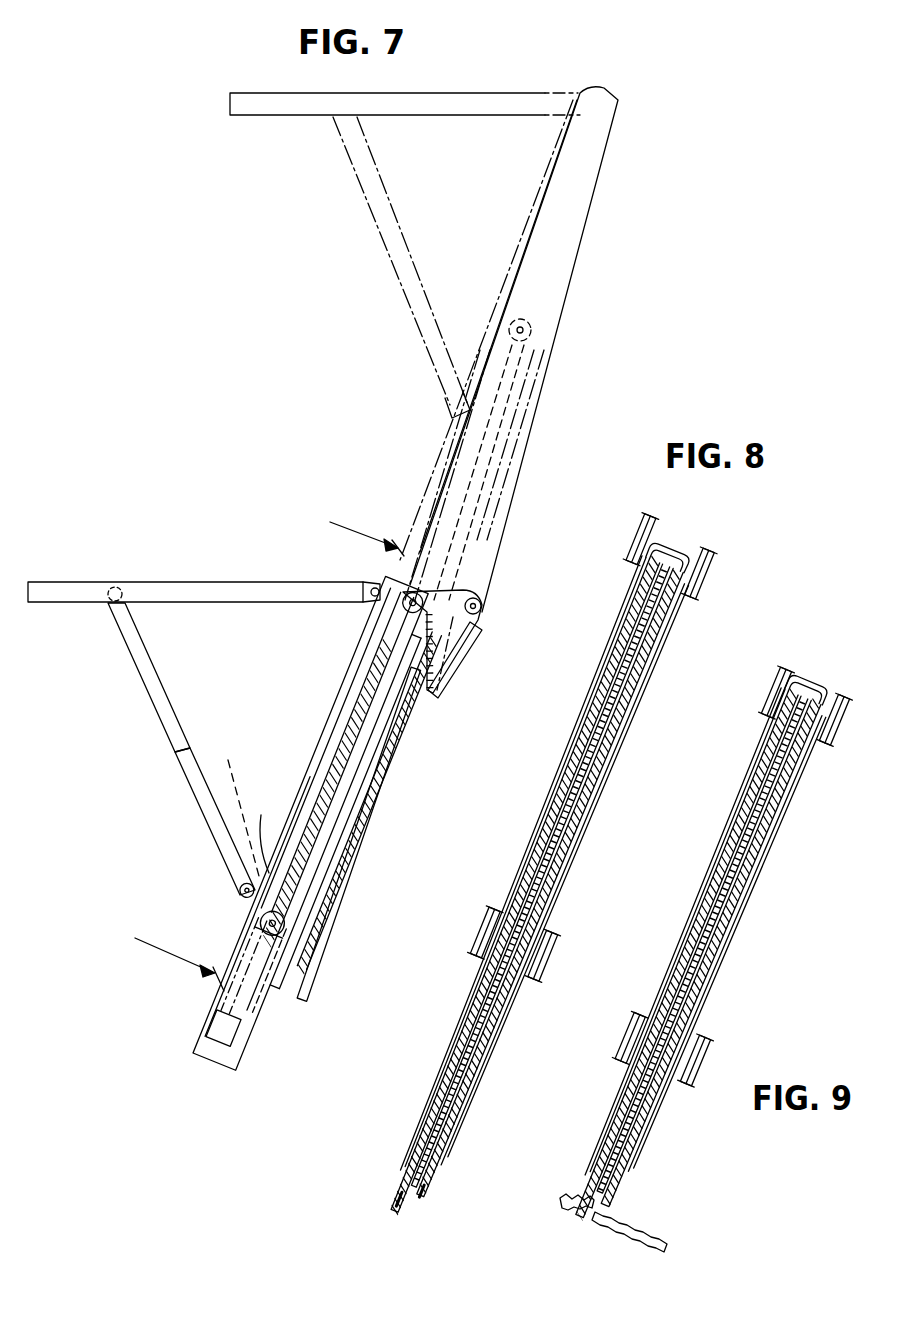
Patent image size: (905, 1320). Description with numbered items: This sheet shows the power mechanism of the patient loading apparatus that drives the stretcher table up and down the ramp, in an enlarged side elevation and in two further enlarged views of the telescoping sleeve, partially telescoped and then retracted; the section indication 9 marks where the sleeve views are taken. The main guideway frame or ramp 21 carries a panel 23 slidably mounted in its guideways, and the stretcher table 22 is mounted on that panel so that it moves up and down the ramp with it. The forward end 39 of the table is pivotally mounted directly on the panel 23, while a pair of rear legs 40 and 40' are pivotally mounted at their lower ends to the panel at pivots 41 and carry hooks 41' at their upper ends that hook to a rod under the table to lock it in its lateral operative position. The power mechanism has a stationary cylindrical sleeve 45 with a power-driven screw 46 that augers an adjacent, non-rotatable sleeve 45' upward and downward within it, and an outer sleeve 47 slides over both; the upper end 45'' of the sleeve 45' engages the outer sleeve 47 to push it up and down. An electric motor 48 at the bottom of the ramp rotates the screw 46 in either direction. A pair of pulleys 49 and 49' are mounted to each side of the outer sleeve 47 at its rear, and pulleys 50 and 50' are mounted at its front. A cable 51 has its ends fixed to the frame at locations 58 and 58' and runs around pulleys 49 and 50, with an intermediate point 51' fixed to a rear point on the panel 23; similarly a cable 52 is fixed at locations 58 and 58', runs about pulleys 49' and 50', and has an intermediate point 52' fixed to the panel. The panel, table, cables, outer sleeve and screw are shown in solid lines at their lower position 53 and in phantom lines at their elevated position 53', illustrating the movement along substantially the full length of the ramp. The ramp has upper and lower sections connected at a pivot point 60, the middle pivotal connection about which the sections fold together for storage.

In FIG. 7, the section arrow / lift assembly 9 is at (258, 746).
In FIG. 7, the main guideway frame or ramp 21 is at (541, 447).
In FIG. 7, the stretcher table 22 is at (447, 93).
In FIG. 7, the panel 23 is at (331, 719).
In FIG. 7, the forward end of the table 39 is at (368, 604).
In FIG. 7, the rear leg 40 is at (140, 677).
In FIG. 7, the rear leg 40' is at (185, 810).
In FIG. 7, the pivot 41 is at (208, 895).
In FIG. 7, the hook 41' is at (207, 800).
In FIG. 8, the stationary cylindrical sleeve 45 is at (528, 887).
In FIG. 9, the stationary cylindrical sleeve 45 is at (681, 956).
In FIG. 8, the adjacent sleeve 45' is at (553, 883).
In FIG. 9, the adjacent sleeve 45' is at (711, 953).
In FIG. 8, the upper end of the sleeve 45'' is at (691, 543).
In FIG. 9, the upper end of the sleeve 45'' is at (814, 670).
In FIG. 7, the screw 46 is at (283, 977).
In FIG. 8, the screw 46 is at (426, 1198).
In FIG. 9, the screw 46 is at (630, 1176).
In FIG. 8, the outer sleeve 47 is at (626, 600).
In FIG. 9, the outer sleeve 47 is at (751, 754).
In FIG. 7, the electric motor 48 is at (241, 1043).
In FIG. 8, the pulley 49 is at (471, 932).
In FIG. 9, the pulley 49 is at (615, 1035).
In FIG. 7, the pulley 49' is at (235, 930).
In FIG. 8, the pulley 49' is at (568, 955).
In FIG. 9, the pulley 49' is at (720, 1053).
In FIG. 8, the pulley 50 is at (629, 539).
In FIG. 7, the pulley 50' is at (469, 456).
In FIG. 8, the pulley 50' is at (726, 573).
In FIG. 9, the pulley 50' is at (815, 718).
In FIG. 7, the cable 51 is at (368, 802).
In FIG. 7, the intermediate point on the cable 51' is at (241, 808).
In FIG. 7, the cable 52 is at (362, 811).
In FIG. 7, the intermediate point on the cable 52' is at (266, 827).
In FIG. 7, the lower position 53 is at (475, 621).
In FIG. 7, the elevated position 53' is at (528, 472).
In FIG. 7, the cable fixing location 58 is at (379, 834).
In FIG. 7, the cable fixing location 58' is at (470, 657).
In FIG. 7, the pivot point 60 is at (484, 607).